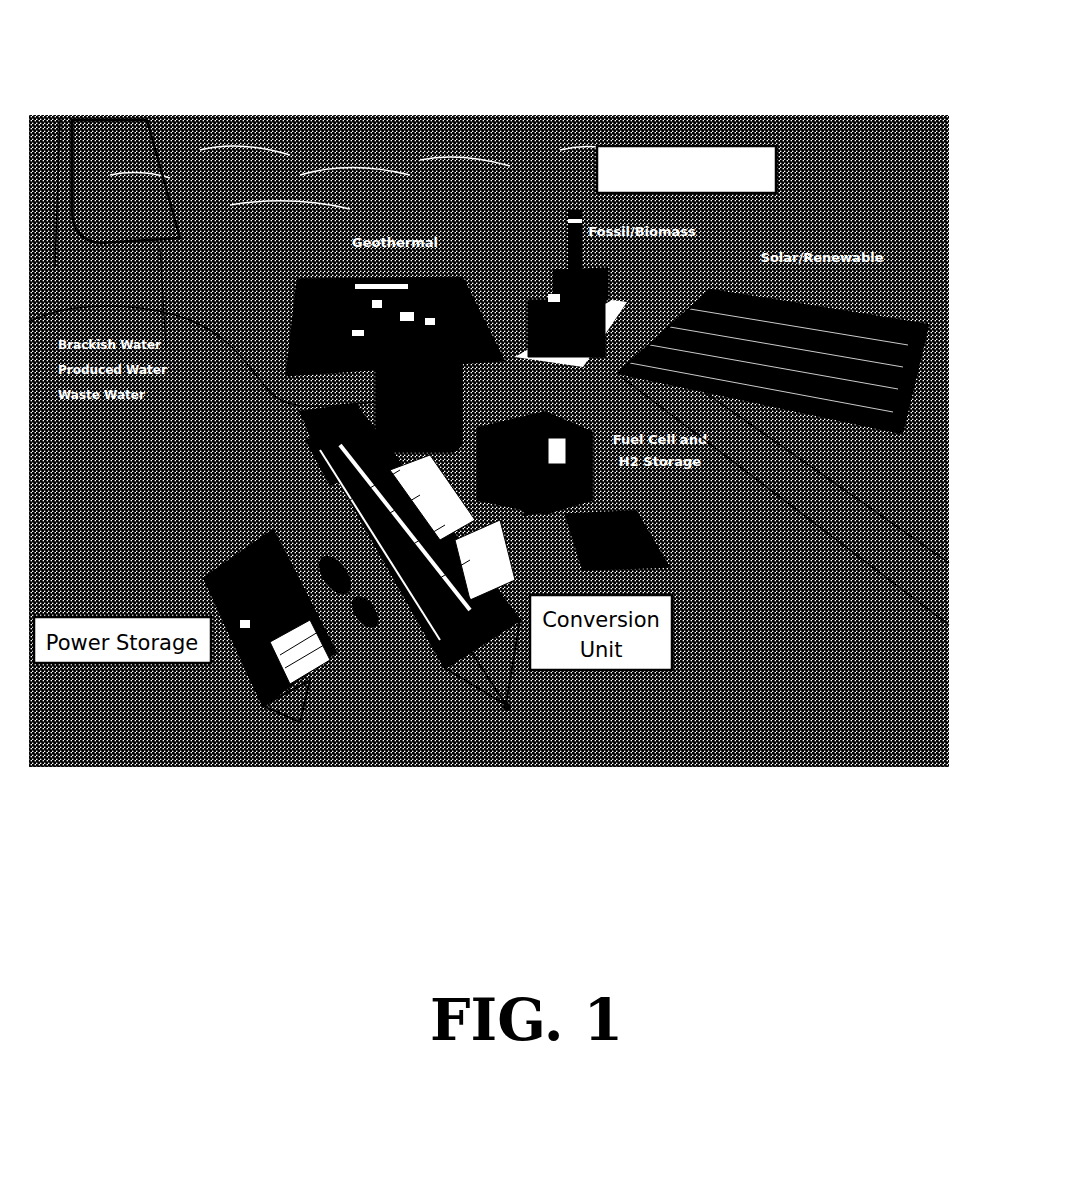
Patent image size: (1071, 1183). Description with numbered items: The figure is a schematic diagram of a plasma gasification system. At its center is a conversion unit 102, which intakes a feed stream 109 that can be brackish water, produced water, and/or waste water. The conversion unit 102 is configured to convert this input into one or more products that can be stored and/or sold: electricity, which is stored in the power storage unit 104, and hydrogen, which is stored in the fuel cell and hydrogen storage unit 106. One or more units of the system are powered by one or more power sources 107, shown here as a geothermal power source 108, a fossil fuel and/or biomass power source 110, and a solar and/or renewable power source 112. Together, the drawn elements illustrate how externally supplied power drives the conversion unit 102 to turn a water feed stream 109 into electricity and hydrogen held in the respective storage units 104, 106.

The conversion unit 102 is at (509, 709).
The power storage unit 104 is at (320, 700).
The fuel cell and hydrogen storage unit 106 is at (669, 567).
The power sources 107 is at (683, 146).
The geothermal power source 108 is at (450, 238).
The feed stream 109 is at (147, 120).
The fossil fuel and/or biomass power source 110 is at (590, 210).
The solar and/or renewable power source 112 is at (877, 310).